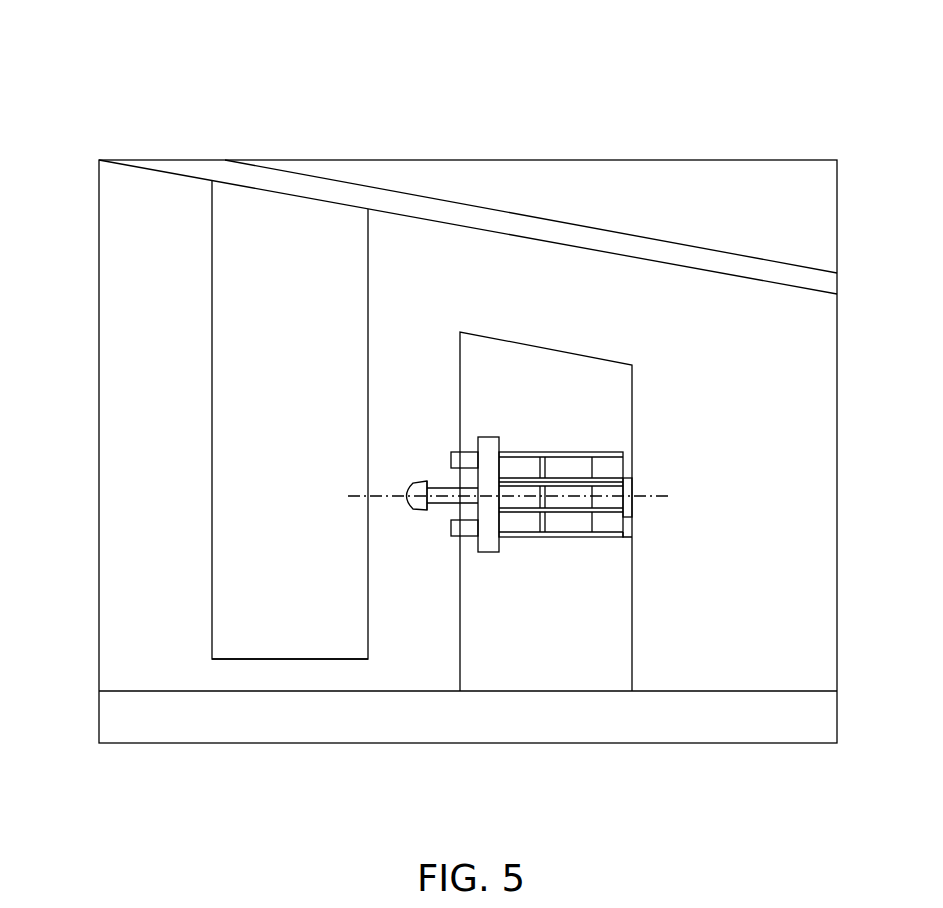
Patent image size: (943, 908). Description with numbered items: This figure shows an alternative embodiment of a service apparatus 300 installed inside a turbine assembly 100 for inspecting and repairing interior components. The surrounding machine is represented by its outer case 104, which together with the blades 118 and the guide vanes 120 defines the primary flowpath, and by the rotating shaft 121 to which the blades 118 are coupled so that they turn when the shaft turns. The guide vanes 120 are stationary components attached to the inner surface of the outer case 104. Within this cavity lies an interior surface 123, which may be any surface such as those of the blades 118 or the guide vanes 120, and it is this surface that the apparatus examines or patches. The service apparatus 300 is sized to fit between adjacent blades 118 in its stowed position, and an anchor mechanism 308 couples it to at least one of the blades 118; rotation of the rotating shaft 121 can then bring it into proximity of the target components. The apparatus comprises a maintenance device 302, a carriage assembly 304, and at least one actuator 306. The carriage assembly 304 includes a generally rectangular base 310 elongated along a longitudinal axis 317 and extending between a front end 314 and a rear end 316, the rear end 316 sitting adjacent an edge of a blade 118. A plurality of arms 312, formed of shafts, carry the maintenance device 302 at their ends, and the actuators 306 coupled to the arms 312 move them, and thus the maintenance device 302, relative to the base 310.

The turbine assembly 100 is at (144, 70).
The outer case 104 is at (705, 258).
The blades 118 is at (622, 628).
The guide vanes 120 is at (290, 660).
The rotating shaft 121 is at (192, 732).
The interior surface 123 is at (222, 576).
The service apparatus 300 is at (519, 504).
The maintenance device 302 is at (403, 487).
The carriage assembly 304 is at (637, 512).
The actuator 306 is at (601, 466).
The anchor mechanism 308 is at (453, 452).
The base 310 is at (566, 538).
The arms 312 is at (520, 462).
The front end 314 is at (452, 538).
The rear end 316 is at (638, 535).
The longitudinal axis 317 is at (345, 503).